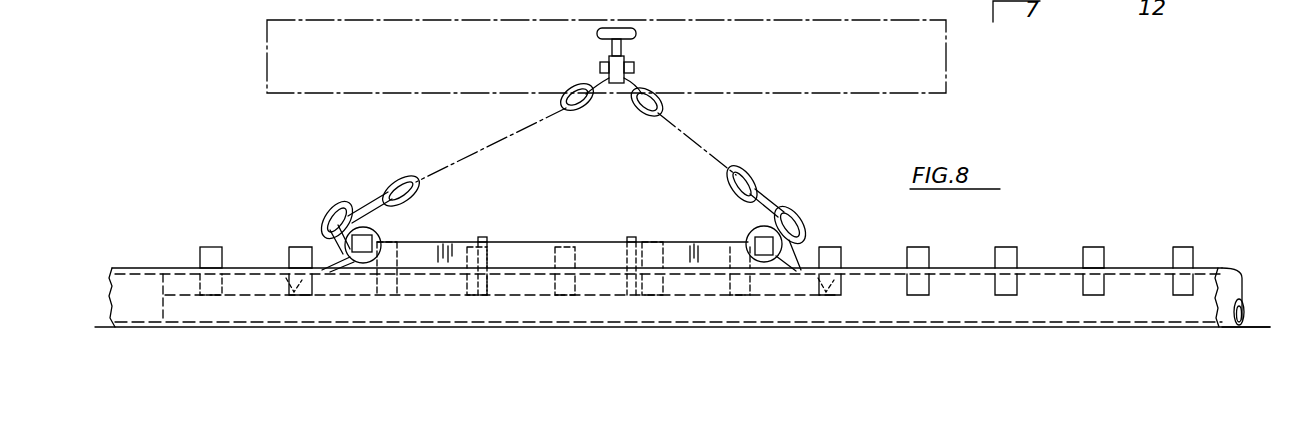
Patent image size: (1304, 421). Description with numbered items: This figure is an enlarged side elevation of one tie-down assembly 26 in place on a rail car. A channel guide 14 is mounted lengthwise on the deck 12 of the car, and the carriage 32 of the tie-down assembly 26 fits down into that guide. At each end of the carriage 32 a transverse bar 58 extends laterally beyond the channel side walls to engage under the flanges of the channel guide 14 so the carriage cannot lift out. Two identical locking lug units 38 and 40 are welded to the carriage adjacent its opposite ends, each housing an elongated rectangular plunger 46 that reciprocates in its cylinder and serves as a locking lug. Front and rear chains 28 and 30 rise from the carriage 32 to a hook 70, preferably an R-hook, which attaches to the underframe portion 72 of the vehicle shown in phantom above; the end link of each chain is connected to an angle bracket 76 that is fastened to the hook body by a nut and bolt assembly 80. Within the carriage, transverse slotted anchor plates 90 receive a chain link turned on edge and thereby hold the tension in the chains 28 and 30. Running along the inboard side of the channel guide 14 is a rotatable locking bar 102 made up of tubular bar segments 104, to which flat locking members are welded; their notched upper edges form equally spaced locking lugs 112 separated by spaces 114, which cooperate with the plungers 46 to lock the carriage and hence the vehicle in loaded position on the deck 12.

The deck 12 is at (1260, 326).
The channel guide 14 is at (958, 302).
The tie-down assembly 26 is at (360, 198).
The front chain 28 is at (762, 190).
The rear chain 30 is at (410, 178).
The carriage 32 is at (600, 238).
The locking lug unit 38 is at (762, 237).
The locking lug unit 40 is at (365, 240).
The locking lug or plunger 46 is at (402, 229).
The transverse bar 58 is at (288, 281).
The hook 70 is at (622, 43).
The underframe portion 72 is at (290, 70).
The angle bracket 76 is at (591, 78).
The nut and bolt assembly 80 is at (606, 62).
The anchor plate 90 is at (488, 241).
The locking bar 102 is at (1231, 260).
The tubular bar segment 104 is at (1226, 322).
The locking lug 112 is at (211, 250).
The space 114 is at (273, 249).